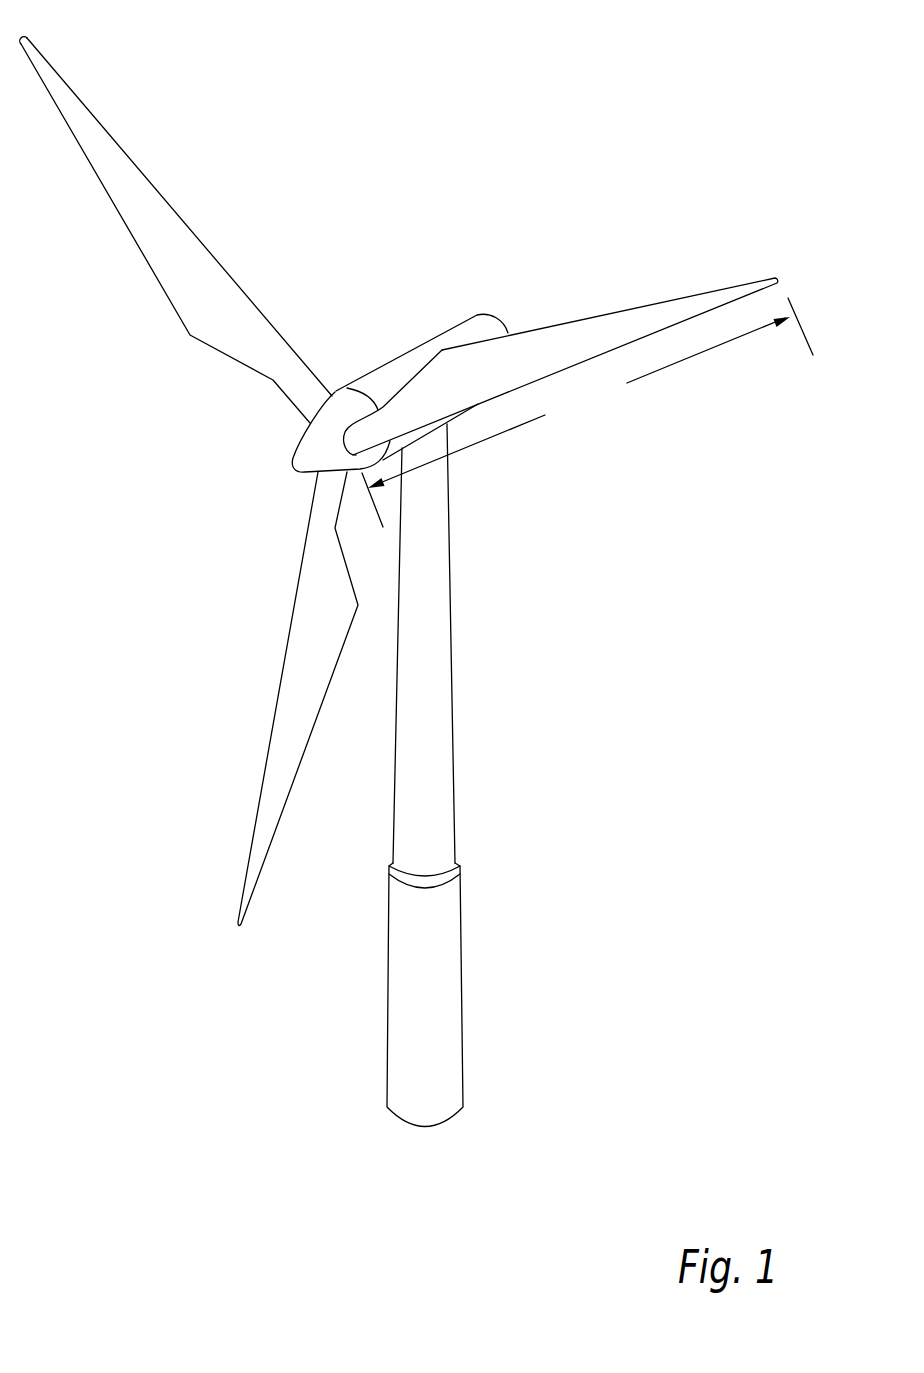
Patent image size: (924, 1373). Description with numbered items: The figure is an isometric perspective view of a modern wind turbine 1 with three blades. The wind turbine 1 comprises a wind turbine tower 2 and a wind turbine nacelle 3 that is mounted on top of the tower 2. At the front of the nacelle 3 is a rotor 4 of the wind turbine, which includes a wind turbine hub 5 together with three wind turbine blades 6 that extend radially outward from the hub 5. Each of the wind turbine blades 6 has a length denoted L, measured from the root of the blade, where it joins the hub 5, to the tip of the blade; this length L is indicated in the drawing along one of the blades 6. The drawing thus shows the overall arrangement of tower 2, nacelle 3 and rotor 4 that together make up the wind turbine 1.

The wind turbine 1 is at (428, 188).
The wind turbine tower 2 is at (453, 721).
The wind turbine nacelle 3 is at (373, 368).
The rotor 4 is at (32, 43).
The wind turbine hub 5 is at (287, 467).
The wind turbine blades 6 is at (143, 178).
The length L is at (587, 412).